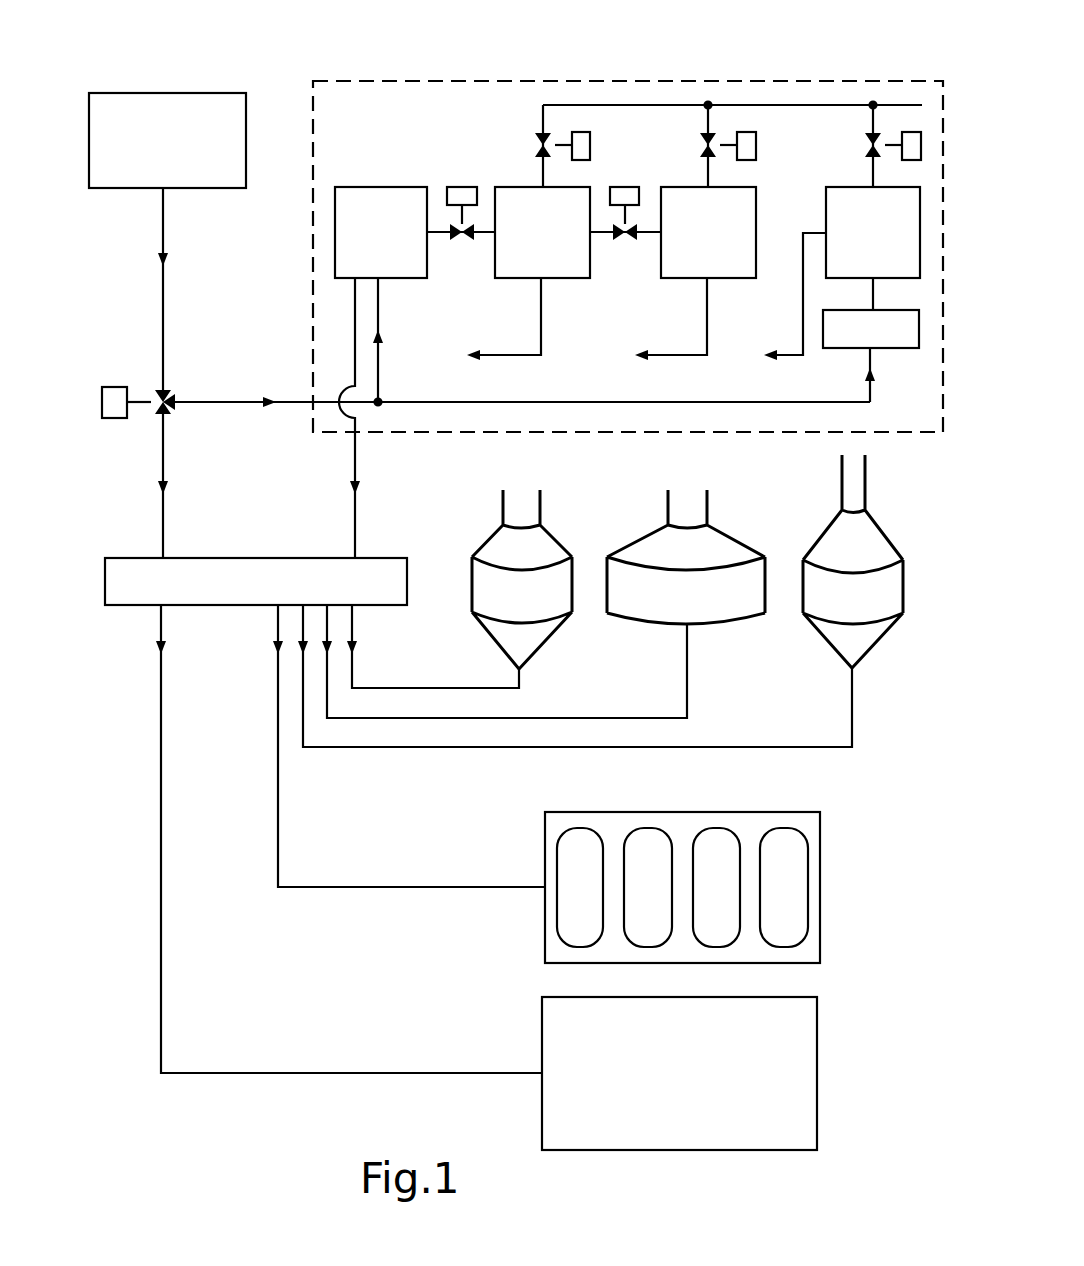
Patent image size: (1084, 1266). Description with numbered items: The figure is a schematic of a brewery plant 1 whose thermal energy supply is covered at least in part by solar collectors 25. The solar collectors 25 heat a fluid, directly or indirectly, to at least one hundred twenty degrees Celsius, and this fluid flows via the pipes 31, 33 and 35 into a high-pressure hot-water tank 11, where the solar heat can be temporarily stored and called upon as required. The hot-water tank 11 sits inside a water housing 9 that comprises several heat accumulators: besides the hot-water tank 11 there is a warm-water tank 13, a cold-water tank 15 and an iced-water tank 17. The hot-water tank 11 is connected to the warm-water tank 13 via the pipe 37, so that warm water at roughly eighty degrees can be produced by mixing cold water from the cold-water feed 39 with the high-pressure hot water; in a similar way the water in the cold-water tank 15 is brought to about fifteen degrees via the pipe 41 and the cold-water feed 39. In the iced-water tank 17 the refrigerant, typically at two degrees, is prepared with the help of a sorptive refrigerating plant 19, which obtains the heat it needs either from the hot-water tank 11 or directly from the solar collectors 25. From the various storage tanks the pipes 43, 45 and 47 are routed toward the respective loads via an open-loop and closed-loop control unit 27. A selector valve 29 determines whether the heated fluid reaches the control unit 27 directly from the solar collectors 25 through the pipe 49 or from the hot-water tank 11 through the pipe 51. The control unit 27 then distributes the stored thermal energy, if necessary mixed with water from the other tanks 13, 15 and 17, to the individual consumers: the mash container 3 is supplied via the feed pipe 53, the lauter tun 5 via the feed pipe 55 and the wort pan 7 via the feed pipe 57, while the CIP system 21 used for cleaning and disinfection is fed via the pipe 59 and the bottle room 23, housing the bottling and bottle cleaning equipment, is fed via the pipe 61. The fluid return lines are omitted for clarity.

The brewery plant 1 is at (110, 52).
The mash container 3 is at (486, 546).
The lauter tun 5 is at (645, 541).
The wort pan 7 is at (818, 545).
The water housing 9 is at (909, 81).
The high-pressure hot-water tank 11 is at (381, 232).
The warm-water tank 13 is at (542, 232).
The cold-water tank 15 is at (708, 232).
The iced-water tank 17 is at (873, 248).
The sorptive refrigerating plant 19 is at (871, 356).
The CIP system 21 is at (821, 827).
The bottle room 23 is at (818, 1010).
The solar collectors 25 is at (167, 140).
The open-loop and closed-loop control unit 27 is at (256, 581).
The selector valve 29 is at (142, 385).
The pipe 31 is at (163, 237).
The pipe 33 is at (234, 401).
The pipe 35 is at (380, 313).
The pipe 37 is at (480, 235).
The cold-water feed 39 is at (542, 115).
The pipe 41 is at (647, 236).
The pipe 43 is at (802, 313).
The pipe 45 is at (706, 313).
The pipe 47 is at (540, 312).
The pipe 49 is at (161, 462).
The pipe 51 is at (353, 462).
The feed pipe 53 is at (438, 688).
The feed pipe 55 is at (598, 718).
The feed pipe 57 is at (768, 747).
The pipe 59 is at (436, 887).
The pipe 61 is at (434, 1073).